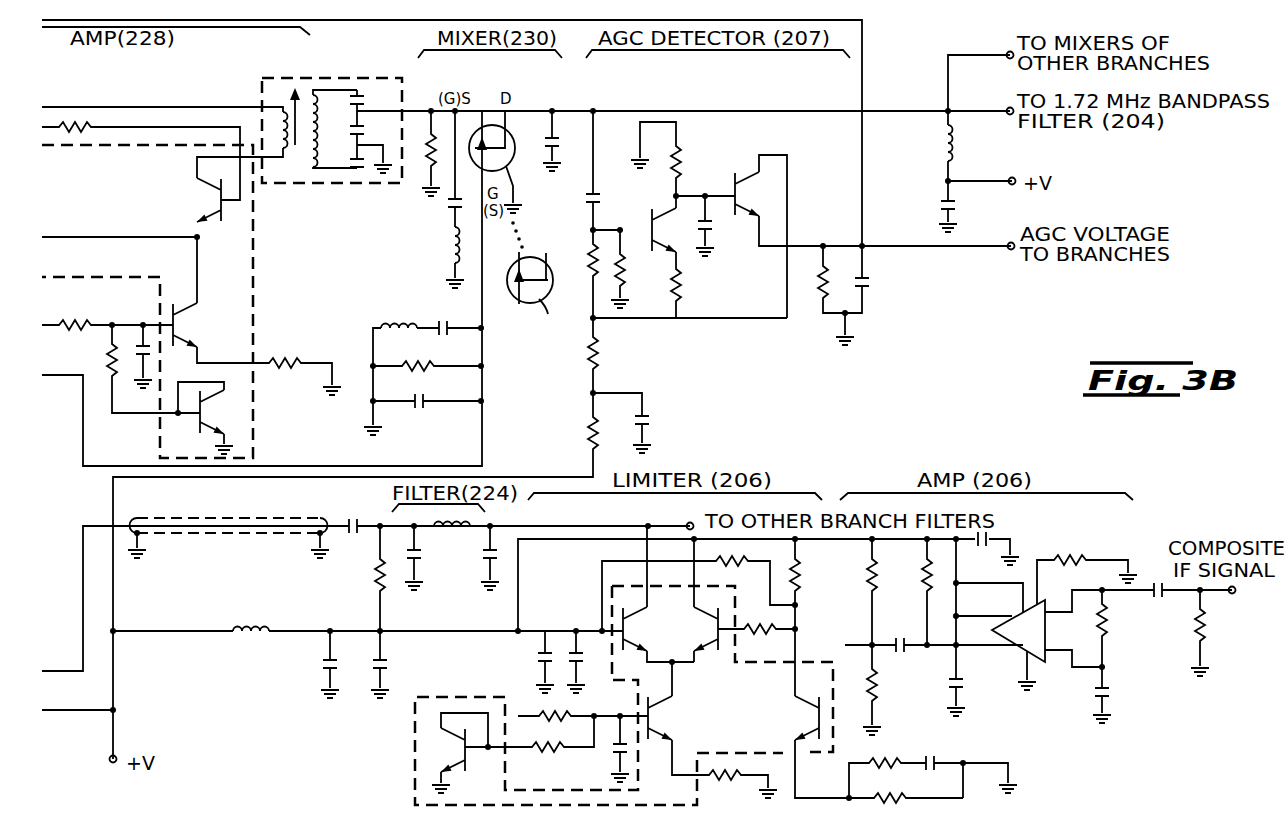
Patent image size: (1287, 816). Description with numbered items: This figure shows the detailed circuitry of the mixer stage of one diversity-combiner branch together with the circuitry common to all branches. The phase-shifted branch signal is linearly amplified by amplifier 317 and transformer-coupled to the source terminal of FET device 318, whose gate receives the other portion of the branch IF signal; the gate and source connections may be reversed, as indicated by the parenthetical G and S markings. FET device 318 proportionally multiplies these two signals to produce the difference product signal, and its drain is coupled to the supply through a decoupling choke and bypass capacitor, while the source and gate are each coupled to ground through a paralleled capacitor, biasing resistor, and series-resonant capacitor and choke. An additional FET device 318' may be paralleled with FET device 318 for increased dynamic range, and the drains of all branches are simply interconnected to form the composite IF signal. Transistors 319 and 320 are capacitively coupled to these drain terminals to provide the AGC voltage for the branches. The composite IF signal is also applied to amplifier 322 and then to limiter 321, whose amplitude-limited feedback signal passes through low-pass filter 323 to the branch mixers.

The amplifier 317 is at (253, 270).
The FET device 318 is at (300, 288).
The additional FET device 318' is at (526, 285).
The transistor 319 is at (652, 217).
The transistor 320 is at (735, 182).
The limiter 321 is at (814, 668).
The amplifier 322 is at (1026, 643).
The low-pass filter 323 is at (470, 569).